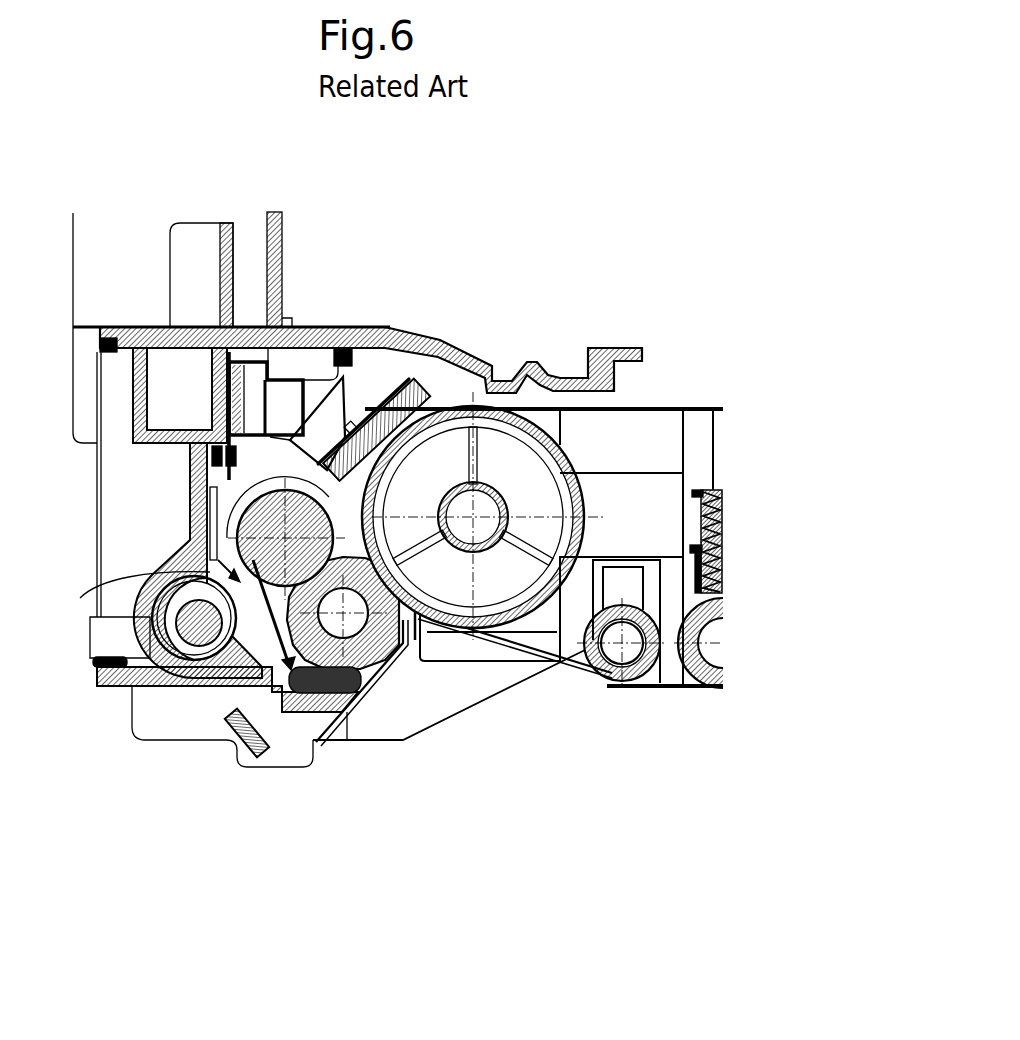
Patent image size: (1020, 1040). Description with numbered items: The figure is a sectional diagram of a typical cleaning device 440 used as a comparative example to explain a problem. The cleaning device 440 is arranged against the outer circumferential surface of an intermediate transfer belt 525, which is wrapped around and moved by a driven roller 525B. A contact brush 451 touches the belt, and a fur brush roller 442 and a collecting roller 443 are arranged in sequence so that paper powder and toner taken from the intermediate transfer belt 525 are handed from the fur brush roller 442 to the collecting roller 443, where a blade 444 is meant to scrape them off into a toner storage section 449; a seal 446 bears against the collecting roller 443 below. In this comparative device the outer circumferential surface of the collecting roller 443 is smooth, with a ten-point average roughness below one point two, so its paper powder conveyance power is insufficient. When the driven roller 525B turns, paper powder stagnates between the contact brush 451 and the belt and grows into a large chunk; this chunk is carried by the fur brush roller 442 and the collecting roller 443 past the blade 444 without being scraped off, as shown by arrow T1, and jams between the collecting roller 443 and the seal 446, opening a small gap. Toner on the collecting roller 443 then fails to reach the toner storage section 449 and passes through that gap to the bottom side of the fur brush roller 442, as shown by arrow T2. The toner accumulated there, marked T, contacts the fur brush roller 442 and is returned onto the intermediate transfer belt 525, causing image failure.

The cleaning device 440 is at (140, 873).
The fur brush roller 442 is at (402, 650).
The collecting roller 443 is at (305, 520).
The blade 444 is at (245, 475).
The seal 446 is at (260, 557).
The toner storage section 449 is at (220, 735).
The contact brush 451 is at (348, 405).
The intermediate transfer belt 525 is at (668, 407).
The driven roller 525B is at (510, 467).
The accumulated toner T is at (353, 690).
The arrow indicating paper powder conveyance T1 is at (148, 590).
The arrow indicating toner passage T2 is at (272, 632).